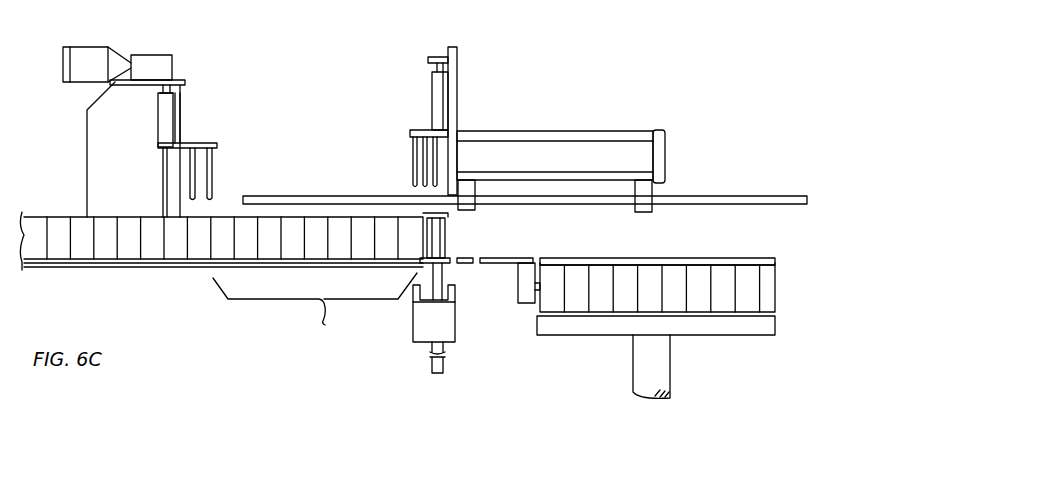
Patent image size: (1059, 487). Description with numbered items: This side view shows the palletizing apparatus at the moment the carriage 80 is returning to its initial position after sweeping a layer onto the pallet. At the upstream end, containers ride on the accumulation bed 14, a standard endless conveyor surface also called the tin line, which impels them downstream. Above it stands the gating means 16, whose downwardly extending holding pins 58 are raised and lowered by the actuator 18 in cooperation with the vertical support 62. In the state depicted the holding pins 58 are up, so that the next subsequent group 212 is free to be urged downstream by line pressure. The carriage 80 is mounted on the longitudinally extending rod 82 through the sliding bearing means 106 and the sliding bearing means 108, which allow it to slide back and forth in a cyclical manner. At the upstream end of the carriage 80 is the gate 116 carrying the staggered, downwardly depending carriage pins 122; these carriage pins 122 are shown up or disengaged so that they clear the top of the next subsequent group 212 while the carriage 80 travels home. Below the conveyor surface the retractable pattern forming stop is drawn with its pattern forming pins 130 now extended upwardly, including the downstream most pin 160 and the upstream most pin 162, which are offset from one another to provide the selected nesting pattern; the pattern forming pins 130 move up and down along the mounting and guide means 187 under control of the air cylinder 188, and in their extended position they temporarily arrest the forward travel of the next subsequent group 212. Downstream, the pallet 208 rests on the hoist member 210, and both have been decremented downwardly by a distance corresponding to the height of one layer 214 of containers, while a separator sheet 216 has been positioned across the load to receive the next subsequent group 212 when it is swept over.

The accumulation bed 14 is at (97, 268).
The gating means 16 is at (150, 63).
The actuator 18 is at (95, 74).
The holding pins 58 is at (192, 168).
The vertical support 62 is at (127, 168).
The carriage 80 is at (545, 128).
The longitudinally extending rod 82 is at (318, 195).
The sliding bearing means 106 is at (467, 180).
The sliding bearing means 108 is at (643, 190).
The gate 116 is at (440, 123).
The carriage pins 122 is at (430, 156).
The pattern forming pins 130 is at (445, 213).
The downstream most pin 160 is at (442, 242).
The upstream most pin 162 is at (427, 245).
The mounting and guide means 187 is at (432, 307).
The air cylinder 188 is at (443, 325).
The pallet 208 is at (617, 322).
The hoist member 210 is at (650, 362).
The next subsequent group 212 is at (315, 310).
The height of one layer 214 is at (786, 262).
The separator sheet 216 is at (700, 258).